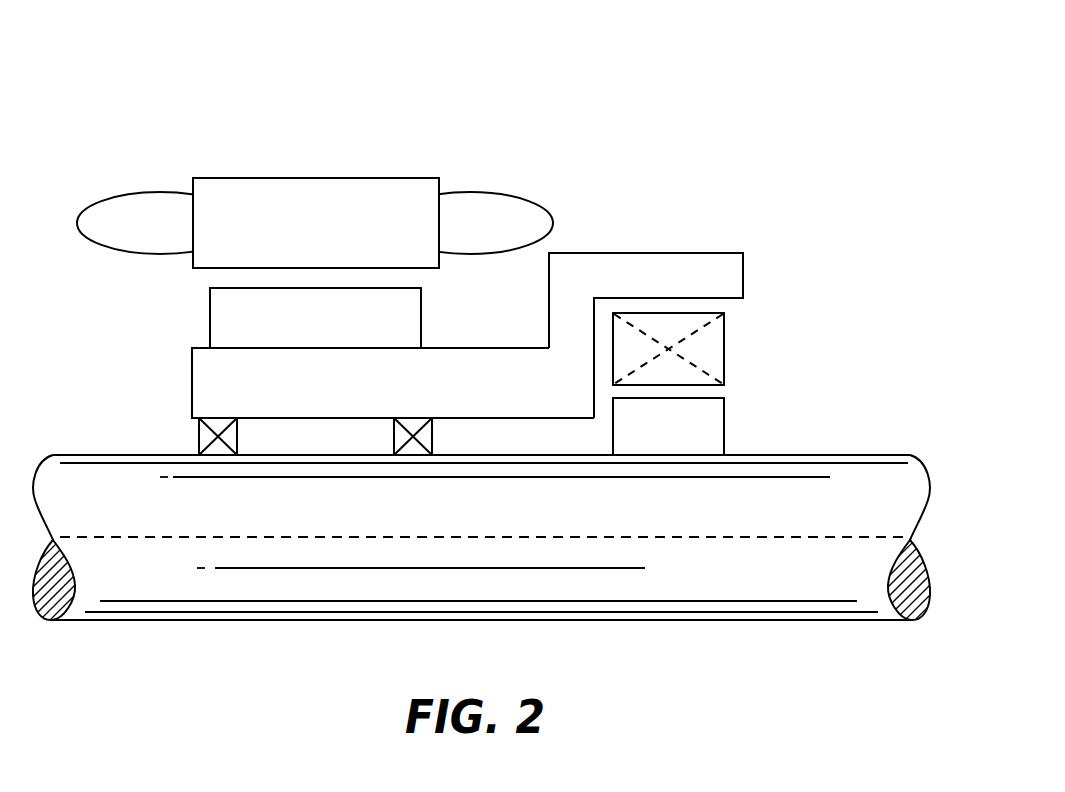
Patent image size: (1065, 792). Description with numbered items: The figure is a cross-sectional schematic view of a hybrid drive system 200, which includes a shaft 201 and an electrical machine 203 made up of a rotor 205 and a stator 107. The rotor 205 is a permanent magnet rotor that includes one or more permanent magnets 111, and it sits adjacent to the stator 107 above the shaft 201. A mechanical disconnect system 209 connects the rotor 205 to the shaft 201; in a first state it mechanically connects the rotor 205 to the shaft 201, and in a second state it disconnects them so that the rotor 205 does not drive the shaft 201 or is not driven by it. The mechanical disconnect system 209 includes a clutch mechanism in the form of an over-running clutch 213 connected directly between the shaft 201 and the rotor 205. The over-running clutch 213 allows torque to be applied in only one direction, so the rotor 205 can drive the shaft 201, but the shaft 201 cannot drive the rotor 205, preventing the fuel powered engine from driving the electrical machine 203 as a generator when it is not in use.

The hybrid drive system 200 is at (676, 108).
The electrical machine 203 is at (148, 146).
The stator 107 is at (282, 192).
The permanent magnets 111 is at (334, 333).
The rotor 205 is at (207, 387).
The mechanical disconnect system 209 is at (744, 210).
The over-running clutch 213 is at (746, 346).
The shaft 201 is at (719, 593).